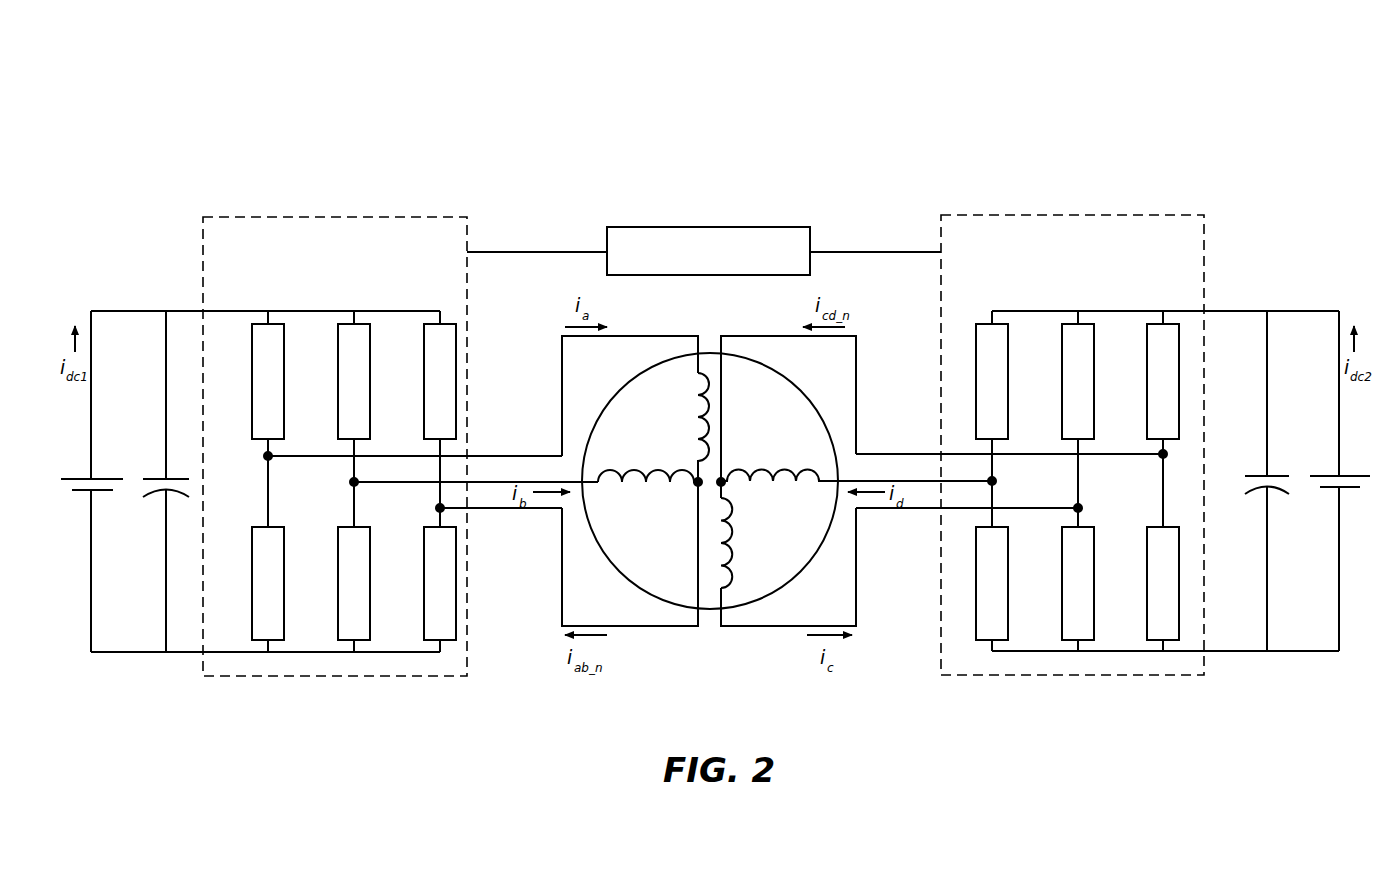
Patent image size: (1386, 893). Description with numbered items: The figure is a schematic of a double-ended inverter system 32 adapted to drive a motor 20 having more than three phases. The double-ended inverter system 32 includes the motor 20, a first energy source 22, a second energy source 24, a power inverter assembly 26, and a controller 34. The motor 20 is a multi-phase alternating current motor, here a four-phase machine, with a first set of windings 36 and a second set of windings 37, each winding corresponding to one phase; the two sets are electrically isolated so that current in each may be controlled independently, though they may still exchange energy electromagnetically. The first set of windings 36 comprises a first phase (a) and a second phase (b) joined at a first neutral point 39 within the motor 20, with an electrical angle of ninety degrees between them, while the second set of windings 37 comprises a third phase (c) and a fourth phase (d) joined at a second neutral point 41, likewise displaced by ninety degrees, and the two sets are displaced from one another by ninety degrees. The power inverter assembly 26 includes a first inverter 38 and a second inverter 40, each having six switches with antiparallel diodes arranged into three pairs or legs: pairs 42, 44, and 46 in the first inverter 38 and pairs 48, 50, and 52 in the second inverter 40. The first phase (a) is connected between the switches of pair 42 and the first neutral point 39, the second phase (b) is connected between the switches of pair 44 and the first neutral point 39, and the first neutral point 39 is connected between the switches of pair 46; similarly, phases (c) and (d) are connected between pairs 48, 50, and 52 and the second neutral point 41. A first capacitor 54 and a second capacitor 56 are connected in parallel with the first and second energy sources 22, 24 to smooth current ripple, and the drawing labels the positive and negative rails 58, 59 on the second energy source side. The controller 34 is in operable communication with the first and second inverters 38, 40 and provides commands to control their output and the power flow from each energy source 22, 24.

The motor 20 is at (709, 461).
The first energy source 22 is at (75, 472).
The second energy source 24 is at (1357, 466).
The power inverter assembly 26 is at (706, 405).
The double-ended inverter system 32 is at (1190, 78).
The controller 34 is at (704, 251).
The first set of windings 36 is at (700, 379).
The second set of windings 37 is at (782, 478).
The first inverter 38 is at (238, 216).
The first neutral point 39 is at (706, 488).
The second inverter 40 is at (1183, 214).
The second neutral point 41 is at (722, 477).
The switch pair 42 is at (269, 660).
The switch pair 44 is at (355, 660).
The switch pair 46 is at (441, 660).
The switch pair 48 is at (993, 660).
The switch pair 50 is at (1079, 660).
The switch pair 52 is at (1164, 660).
The first capacitor 54 is at (158, 489).
The second capacitor 56 is at (1272, 486).
The positive DC rail 58 is at (1226, 310).
The negative DC rail 59 is at (1240, 652).